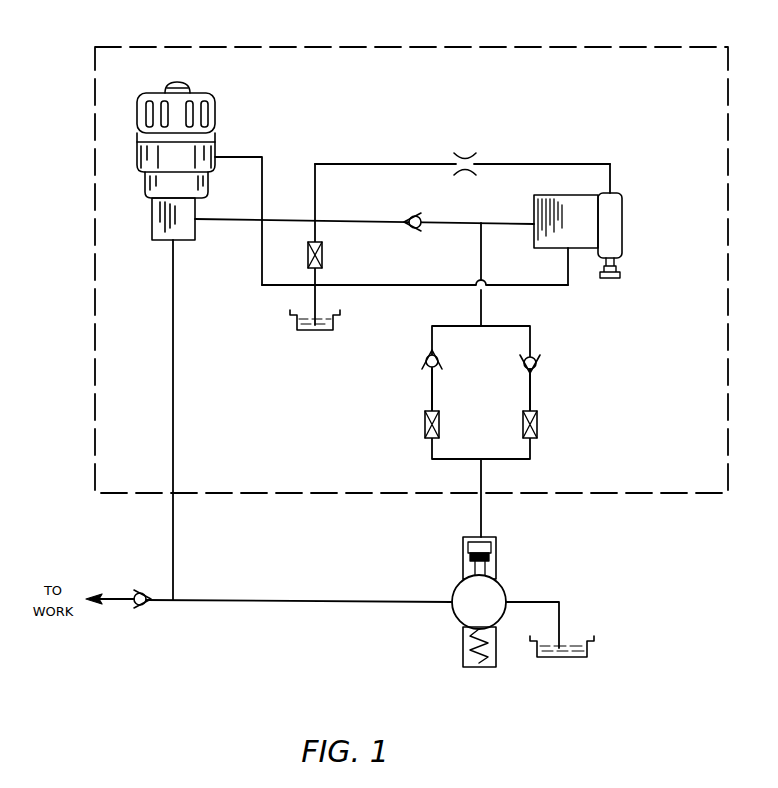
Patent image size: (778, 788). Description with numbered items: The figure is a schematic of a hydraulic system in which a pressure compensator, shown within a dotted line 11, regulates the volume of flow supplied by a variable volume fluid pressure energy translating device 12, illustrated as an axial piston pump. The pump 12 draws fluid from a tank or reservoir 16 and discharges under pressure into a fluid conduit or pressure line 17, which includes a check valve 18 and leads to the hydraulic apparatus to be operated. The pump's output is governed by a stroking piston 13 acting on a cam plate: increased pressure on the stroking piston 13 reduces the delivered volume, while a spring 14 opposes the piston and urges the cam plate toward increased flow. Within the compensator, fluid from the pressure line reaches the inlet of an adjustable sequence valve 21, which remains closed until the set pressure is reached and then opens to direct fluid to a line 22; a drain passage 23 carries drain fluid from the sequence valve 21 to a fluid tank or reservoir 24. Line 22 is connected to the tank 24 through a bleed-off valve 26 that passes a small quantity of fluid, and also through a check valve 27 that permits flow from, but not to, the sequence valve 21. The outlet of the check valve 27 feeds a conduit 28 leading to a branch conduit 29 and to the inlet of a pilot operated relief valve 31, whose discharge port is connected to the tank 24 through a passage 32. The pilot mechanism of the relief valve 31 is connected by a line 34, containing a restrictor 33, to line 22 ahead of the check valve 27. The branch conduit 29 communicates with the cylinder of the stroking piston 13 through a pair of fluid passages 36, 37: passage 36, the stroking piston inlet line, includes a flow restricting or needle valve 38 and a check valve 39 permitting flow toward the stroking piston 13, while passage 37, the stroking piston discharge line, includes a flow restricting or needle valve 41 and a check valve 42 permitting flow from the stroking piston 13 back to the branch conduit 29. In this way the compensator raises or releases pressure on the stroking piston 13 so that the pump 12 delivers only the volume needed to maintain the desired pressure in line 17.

The dotted line 11 is at (371, 46).
The variable volume fluid pressure energy translating device 12 is at (490, 619).
The stroking piston 13 is at (470, 557).
The spring 14 is at (478, 668).
The tank or reservoir 16 is at (587, 653).
The fluid conduit or pressure line 17 is at (301, 603).
The check valve 18 is at (144, 591).
The sequence valve 21 is at (217, 102).
The line 22 is at (234, 220).
The drain passage 23 is at (242, 156).
The fluid tank or reservoir 24 is at (292, 318).
The bleed-off valve 26 is at (324, 256).
The check valve 27 is at (408, 217).
The conduit 28 is at (467, 221).
The branch conduit 29 is at (478, 268).
The pilot operated relief valve 31 is at (571, 235).
The passage 32 is at (389, 288).
The restrictor 33 is at (463, 153).
The line 34 is at (551, 164).
The fluid passage 36 is at (430, 398).
The fluid passage 37 is at (533, 391).
The flow restricting or needle valve 38 is at (424, 427).
The check valve 39 is at (425, 362).
The flow restricting or needle valve 41 is at (538, 428).
The check valve 42 is at (540, 366).